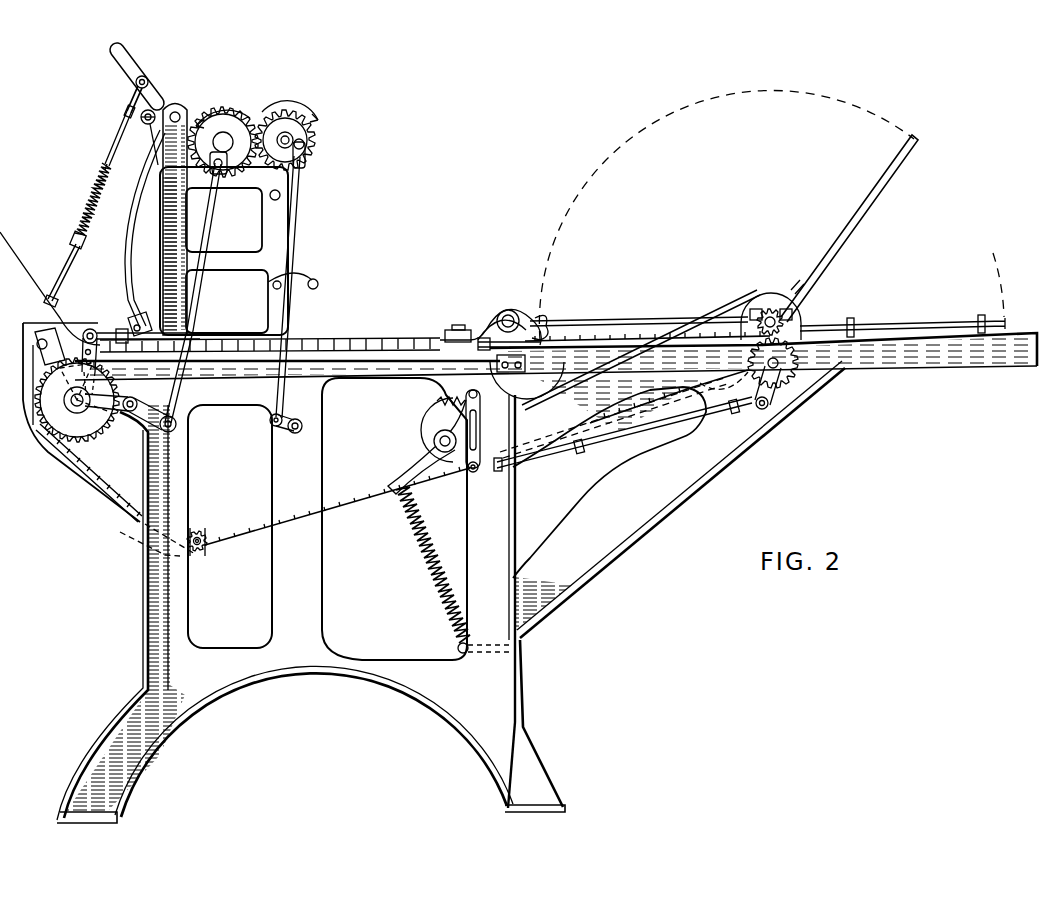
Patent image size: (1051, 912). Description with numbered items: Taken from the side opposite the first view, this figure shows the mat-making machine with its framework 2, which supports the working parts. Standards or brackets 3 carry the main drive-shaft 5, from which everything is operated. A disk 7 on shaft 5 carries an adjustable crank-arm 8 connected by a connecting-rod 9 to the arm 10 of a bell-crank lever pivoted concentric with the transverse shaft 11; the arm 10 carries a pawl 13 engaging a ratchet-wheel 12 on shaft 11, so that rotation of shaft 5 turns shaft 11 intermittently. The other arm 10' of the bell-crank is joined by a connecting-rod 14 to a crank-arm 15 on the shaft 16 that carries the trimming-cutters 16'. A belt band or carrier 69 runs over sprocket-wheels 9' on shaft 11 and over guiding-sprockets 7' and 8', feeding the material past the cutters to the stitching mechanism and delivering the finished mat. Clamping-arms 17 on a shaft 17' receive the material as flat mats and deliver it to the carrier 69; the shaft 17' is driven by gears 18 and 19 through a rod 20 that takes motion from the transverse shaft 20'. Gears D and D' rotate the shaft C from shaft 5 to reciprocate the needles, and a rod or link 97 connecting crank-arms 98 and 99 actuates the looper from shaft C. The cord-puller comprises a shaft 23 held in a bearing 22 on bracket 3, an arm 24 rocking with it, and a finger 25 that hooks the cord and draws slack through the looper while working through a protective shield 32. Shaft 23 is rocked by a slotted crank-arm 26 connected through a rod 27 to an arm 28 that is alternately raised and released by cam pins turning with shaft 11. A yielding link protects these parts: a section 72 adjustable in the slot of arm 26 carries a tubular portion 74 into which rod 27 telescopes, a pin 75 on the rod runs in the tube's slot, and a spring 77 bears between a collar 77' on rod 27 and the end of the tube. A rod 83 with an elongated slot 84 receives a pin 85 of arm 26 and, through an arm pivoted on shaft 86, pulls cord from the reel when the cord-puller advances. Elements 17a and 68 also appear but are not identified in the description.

The framework 2 is at (315, 574).
The standards or brackets 3 is at (233, 262).
The main drive-shaft 5 is at (232, 118).
The disk 7 is at (223, 112).
The guiding-sprocket 7' is at (721, 378).
The crank-arm 8 is at (211, 241).
The guiding-sprocket 8' is at (216, 528).
The connecting-rod 9 is at (191, 358).
The sprocket-wheels 9' is at (70, 377).
The arm of bell-crank lever 10 is at (164, 403).
The arm of bell-crank lever 10' is at (61, 387).
The shaft 11 is at (68, 402).
The ratchet-wheel 12 is at (40, 428).
The pawl 13 is at (132, 392).
The connecting-rod 14 is at (330, 346).
The crank-arm 15 is at (483, 330).
The shaft 16 is at (522, 320).
The trimming-cutters 16' is at (565, 319).
The clamping-arms 17 is at (771, 272).
The shaft 17' is at (771, 303).
The rail 17a is at (662, 320).
The gear 18 is at (790, 322).
The gear 19 is at (798, 370).
The rod 20 is at (623, 434).
The transverse shaft 20' is at (475, 521).
The bearing 22 is at (165, 155).
The shaft 23 is at (178, 112).
The arm 24 is at (140, 222).
The finger 25 is at (150, 312).
The crank-arm 26 is at (140, 56).
The rod 27 is at (68, 262).
The arm 28 is at (65, 350).
The shield 32 is at (52, 332).
The chain 68 is at (434, 463).
The belt band or carrier 69 is at (100, 488).
The section 72 is at (130, 98).
The tubular portion 74 is at (118, 128).
The pin or projection 75 is at (104, 150).
The spring 77 is at (64, 199).
The collar 77' is at (49, 233).
The rod 83 is at (156, 143).
The elongated slot 84 is at (146, 125).
The pin or projection 85 is at (152, 110).
The shaft 86 is at (200, 532).
The rod or link 97 is at (270, 282).
The crank-arm 98 is at (306, 148).
The crank-arm 99 is at (272, 426).
The shaft C is at (300, 130).
The gear D is at (238, 91).
The gear D' is at (292, 119).